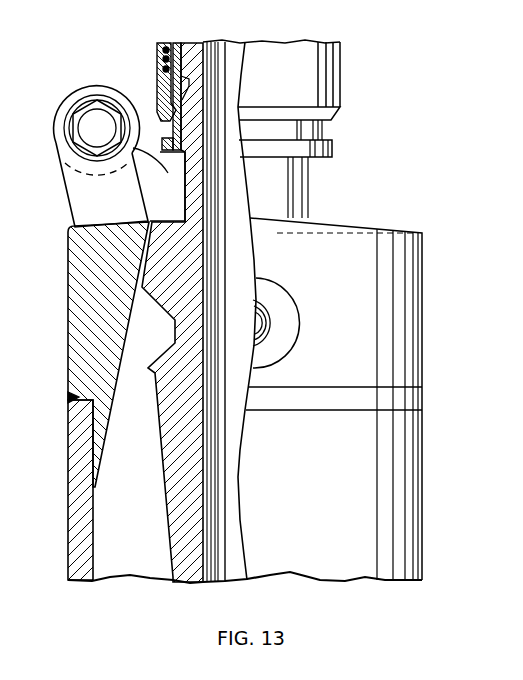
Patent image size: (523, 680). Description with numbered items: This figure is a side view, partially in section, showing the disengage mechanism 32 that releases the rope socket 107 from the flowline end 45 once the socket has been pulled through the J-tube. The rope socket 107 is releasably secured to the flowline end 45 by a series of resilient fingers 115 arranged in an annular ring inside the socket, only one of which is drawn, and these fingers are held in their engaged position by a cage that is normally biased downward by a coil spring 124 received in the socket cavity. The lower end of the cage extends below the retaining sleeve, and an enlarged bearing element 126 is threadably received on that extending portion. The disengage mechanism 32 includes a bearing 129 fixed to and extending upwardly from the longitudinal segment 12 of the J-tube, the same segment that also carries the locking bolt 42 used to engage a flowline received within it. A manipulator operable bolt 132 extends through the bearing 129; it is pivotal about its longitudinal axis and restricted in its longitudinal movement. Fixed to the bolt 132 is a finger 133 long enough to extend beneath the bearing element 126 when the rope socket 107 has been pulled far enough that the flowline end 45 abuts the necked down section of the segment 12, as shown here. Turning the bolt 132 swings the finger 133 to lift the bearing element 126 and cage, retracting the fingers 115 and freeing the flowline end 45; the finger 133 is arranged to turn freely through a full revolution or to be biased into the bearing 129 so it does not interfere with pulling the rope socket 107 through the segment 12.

The longitudinal segment 12 is at (72, 540).
The disengage mechanism 32 is at (54, 133).
The locking bolt 42 is at (258, 293).
The flowline end 45 is at (166, 462).
The rope socket 107 is at (343, 76).
The fingers 115 is at (181, 44).
The coil spring 124 is at (158, 61).
The bearing element 126 is at (162, 146).
The bearing 129 is at (72, 188).
The manipulator operable bolt 132 is at (95, 128).
The finger 133 is at (160, 170).